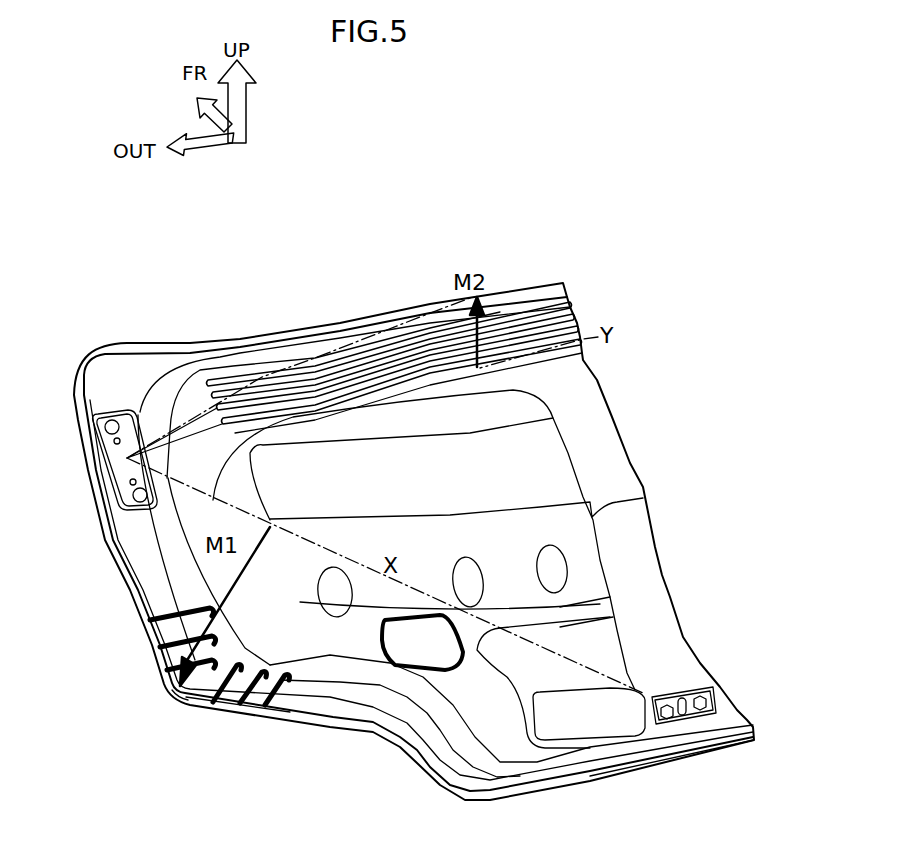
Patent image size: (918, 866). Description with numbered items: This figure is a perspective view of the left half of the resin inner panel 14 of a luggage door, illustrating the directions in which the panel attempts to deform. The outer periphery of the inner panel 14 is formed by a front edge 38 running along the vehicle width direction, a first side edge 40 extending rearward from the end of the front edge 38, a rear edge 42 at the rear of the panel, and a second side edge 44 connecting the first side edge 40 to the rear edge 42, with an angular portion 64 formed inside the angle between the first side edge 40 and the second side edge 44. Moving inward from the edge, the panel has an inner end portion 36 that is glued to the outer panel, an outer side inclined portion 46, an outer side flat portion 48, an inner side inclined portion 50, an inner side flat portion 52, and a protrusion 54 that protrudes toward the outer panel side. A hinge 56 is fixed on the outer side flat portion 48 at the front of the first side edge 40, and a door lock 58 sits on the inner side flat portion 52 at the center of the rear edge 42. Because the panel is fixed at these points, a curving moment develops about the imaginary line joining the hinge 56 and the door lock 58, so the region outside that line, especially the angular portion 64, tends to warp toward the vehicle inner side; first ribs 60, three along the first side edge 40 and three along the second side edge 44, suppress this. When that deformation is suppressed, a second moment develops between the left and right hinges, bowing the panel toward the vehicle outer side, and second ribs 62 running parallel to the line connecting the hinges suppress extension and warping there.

The inner panel 14 is at (139, 303).
The inner end portion 36 is at (130, 580).
The front edge 38 is at (388, 347).
The first side edge 40 is at (123, 510).
The rear edge 42 is at (650, 748).
The second side edge 44 is at (335, 707).
The outer side inclined portion 46 is at (123, 551).
The outer side flat portion 48 is at (143, 543).
The inner side inclined portion 50 is at (340, 680).
The inner side flat portion 52 is at (307, 660).
The protrusion 54 is at (540, 453).
The hinge 56 is at (113, 441).
The door lock 58 is at (697, 695).
The first ribs 60 is at (167, 668).
The second ribs 62 is at (560, 338).
The angular portion 64 is at (180, 703).